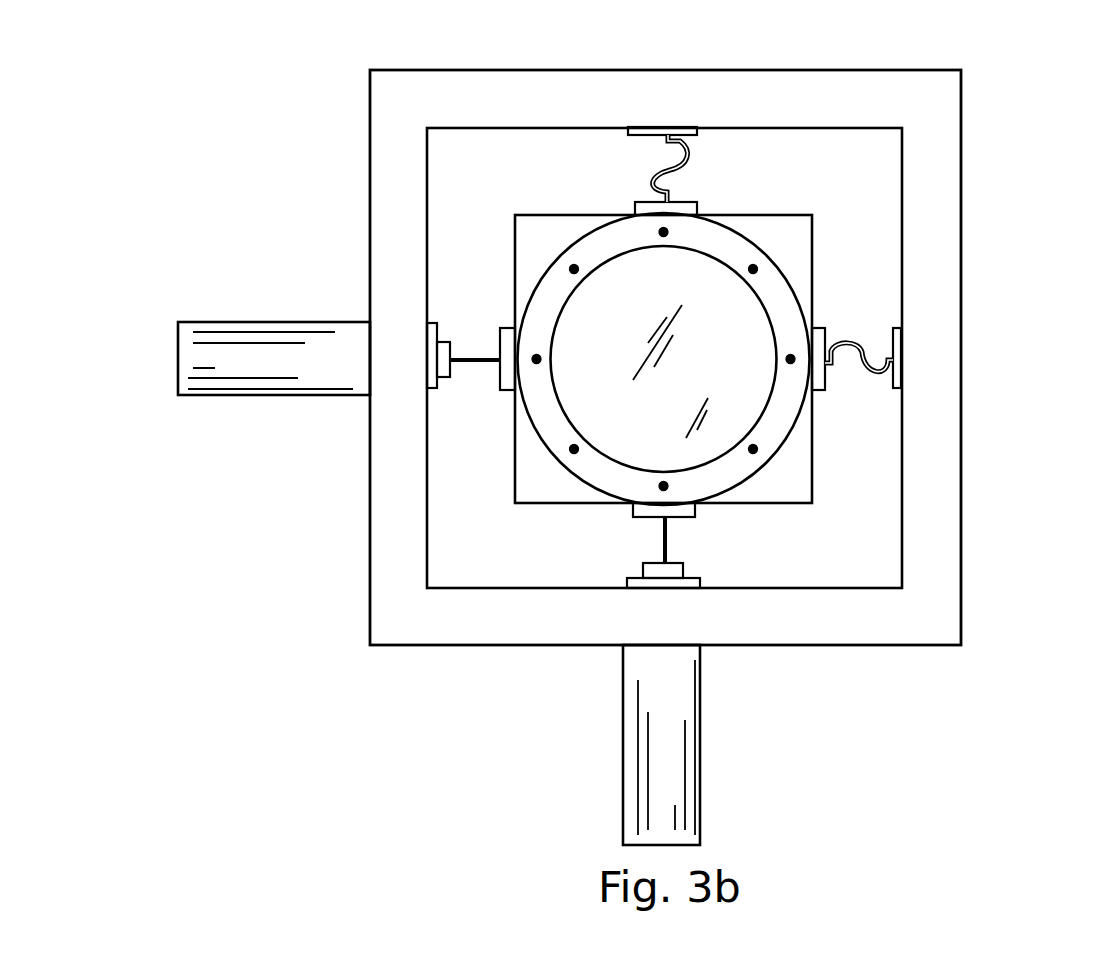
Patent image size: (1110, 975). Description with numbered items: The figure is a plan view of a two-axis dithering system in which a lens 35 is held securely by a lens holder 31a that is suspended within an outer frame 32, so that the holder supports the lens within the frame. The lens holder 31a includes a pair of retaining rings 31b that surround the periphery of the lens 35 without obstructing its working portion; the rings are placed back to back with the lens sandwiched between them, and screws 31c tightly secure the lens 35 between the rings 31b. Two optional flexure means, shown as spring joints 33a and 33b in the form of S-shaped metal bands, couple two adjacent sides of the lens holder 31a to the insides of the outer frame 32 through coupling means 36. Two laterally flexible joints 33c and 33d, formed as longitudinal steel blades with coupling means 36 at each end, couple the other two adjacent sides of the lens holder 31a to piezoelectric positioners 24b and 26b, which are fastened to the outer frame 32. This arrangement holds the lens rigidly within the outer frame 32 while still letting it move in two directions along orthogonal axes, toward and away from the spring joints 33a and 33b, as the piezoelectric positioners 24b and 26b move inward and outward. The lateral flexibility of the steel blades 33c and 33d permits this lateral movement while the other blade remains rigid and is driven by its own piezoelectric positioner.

The piezoelectric positioner 24b is at (227, 321).
The piezoelectric positioner 26b is at (700, 740).
The lens holder 31a is at (787, 462).
The retaining rings 31b is at (780, 402).
The screws 31c is at (567, 452).
The outer frame 32 is at (961, 600).
The spring joint 33a is at (690, 142).
The spring joint 33b is at (865, 347).
The laterally flexible joint 33c is at (673, 542).
The laterally flexible joint 33d is at (470, 367).
The lens 35 is at (730, 337).
The coupling means 36 is at (665, 128).